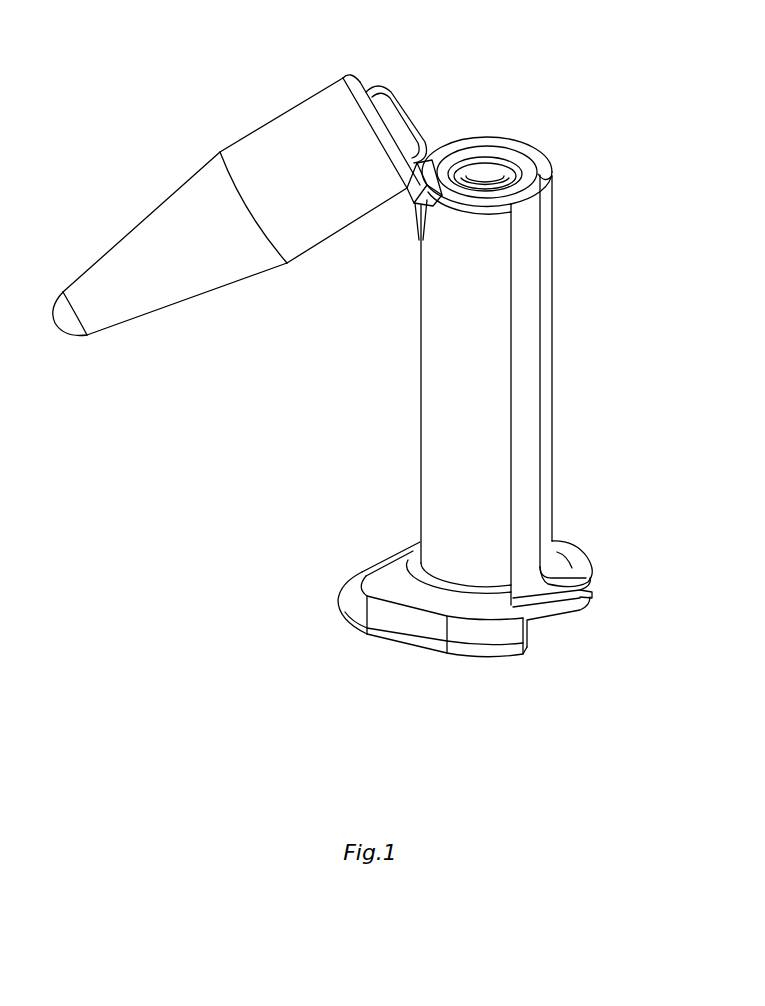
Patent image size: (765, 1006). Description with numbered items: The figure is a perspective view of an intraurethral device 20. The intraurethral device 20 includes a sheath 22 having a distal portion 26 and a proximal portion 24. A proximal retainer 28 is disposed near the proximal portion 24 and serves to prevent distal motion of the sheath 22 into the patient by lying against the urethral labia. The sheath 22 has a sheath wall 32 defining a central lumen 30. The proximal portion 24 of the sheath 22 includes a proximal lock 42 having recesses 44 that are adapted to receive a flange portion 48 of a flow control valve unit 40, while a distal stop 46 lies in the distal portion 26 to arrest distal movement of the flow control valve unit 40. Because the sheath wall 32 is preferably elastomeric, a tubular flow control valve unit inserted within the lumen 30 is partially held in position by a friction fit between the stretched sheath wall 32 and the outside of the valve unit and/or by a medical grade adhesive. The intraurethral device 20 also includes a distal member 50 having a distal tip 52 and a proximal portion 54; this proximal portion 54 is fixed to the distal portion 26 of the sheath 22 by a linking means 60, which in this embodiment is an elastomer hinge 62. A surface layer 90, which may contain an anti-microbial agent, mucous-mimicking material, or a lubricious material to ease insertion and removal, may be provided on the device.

The intraurethral device 20 is at (571, 685).
The sheath 22 is at (445, 499).
The proximal portion 24 is at (577, 538).
The distal portion 26 is at (560, 150).
The proximal retainer 28 is at (348, 602).
The central lumen 30 is at (407, 110).
The sheath wall 32 is at (547, 395).
The flow control valve unit 40 is at (515, 322).
The proximal lock 42 is at (598, 596).
The recesses 44 is at (592, 581).
The distal stop 46 is at (540, 182).
The flange portion 48 is at (572, 617).
The distal member 50 is at (212, 177).
The distal tip 52 is at (67, 350).
The proximal portion 54 is at (346, 68).
The linking means 60 is at (355, 268).
The elastomer hinge 62 is at (417, 208).
The surface layer 90 is at (283, 143).